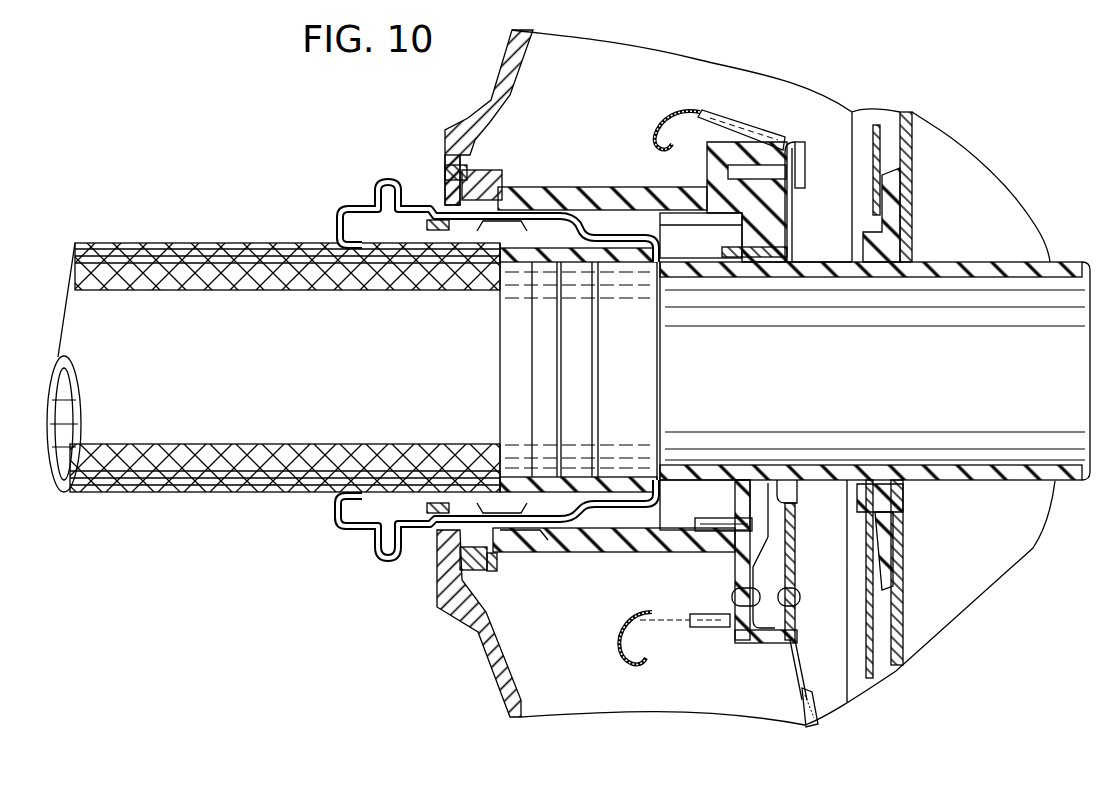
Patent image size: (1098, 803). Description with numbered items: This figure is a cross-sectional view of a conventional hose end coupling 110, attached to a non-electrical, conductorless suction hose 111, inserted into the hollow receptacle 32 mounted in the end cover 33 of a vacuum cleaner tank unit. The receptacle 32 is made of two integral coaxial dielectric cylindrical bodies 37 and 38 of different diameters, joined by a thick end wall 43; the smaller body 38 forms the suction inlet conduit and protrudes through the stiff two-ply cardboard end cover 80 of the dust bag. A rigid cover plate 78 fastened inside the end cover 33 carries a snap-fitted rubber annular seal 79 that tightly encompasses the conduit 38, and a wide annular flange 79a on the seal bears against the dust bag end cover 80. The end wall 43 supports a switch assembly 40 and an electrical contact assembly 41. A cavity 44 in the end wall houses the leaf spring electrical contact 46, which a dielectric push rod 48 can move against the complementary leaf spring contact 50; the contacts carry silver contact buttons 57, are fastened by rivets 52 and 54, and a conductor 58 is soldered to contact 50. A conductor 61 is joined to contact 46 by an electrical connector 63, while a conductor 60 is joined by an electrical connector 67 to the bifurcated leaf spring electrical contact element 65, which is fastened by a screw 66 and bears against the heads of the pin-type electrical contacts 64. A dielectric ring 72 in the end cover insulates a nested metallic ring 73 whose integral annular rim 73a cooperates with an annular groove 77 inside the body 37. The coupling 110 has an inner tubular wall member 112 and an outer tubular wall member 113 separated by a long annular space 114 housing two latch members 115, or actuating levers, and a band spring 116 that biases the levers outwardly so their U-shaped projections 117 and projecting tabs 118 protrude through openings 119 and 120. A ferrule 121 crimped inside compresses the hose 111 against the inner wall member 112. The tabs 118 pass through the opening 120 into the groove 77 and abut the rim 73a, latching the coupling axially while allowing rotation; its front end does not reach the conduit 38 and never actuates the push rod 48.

The hollow receptacle 32 is at (710, 343).
The end cover 33 is at (508, 660).
The hollow cylindrical body 37 is at (626, 188).
The hollow cylindrical body 38 is at (958, 262).
The switch assembly 40 is at (699, 578).
The electrical contact assembly 41 is at (800, 240).
The end wall 43 is at (780, 200).
The cavity 44 is at (798, 542).
The leaf spring electrical contact 46 is at (760, 560).
The push rod 48 is at (714, 518).
The leaf spring contact 50 is at (798, 505).
The rivet 52 is at (733, 597).
The rivet 54 is at (800, 628).
The contact button 57 is at (768, 482).
The conductor 58 is at (800, 702).
The conductor 60 is at (668, 115).
The conductor 61 is at (622, 640).
The electrical connector 63 is at (703, 627).
The pin-type electrical contact 64 is at (742, 250).
The bifurcated leaf spring electrical contact element 65 is at (795, 215).
The screw 66 is at (806, 165).
The electrical connector 67 is at (738, 126).
The ring 72 is at (455, 165).
The ring 73 is at (496, 573).
The annular rim 73a is at (448, 180).
The annular groove 77 is at (538, 540).
The rigid cover plate 78 is at (905, 592).
The annular seal 79 is at (903, 495).
The annular flange 79a is at (895, 195).
The end cover 80 is at (912, 165).
The hose end coupling 110 is at (614, 346).
The suction hose 111 is at (273, 342).
The inner tubular wall member 112 is at (378, 268).
The outer tubular wall member 113 is at (570, 188).
The annular space 114 is at (322, 275).
The latch member 115 is at (430, 222).
The spring 116 is at (446, 235).
The U-shaped projection 117 is at (386, 188).
The projecting tab 118 is at (490, 195).
The opening 119 is at (342, 222).
The opening 120 is at (488, 225).
The ferrule 121 is at (632, 264).